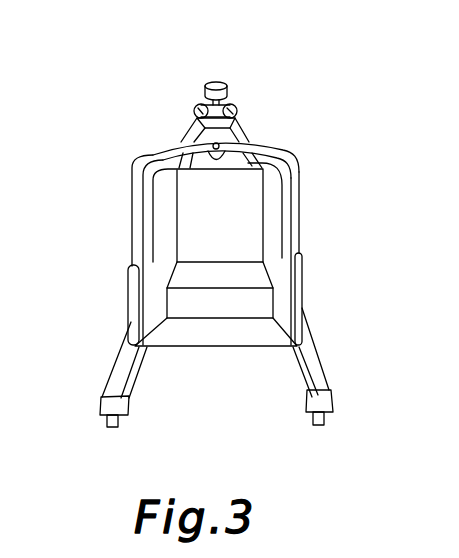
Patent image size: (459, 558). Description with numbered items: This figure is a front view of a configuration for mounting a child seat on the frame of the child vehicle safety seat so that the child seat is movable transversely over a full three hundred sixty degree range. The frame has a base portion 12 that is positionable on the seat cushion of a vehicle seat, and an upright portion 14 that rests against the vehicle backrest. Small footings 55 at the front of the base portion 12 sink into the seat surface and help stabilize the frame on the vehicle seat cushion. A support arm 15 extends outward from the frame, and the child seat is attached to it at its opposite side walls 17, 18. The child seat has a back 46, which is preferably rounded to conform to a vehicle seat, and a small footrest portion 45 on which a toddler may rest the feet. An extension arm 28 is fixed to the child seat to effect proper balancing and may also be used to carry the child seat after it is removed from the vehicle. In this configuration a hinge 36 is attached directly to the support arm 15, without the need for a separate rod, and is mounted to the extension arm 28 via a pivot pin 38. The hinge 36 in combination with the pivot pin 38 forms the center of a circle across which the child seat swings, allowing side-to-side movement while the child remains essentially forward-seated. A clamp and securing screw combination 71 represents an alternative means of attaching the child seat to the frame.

The clamp and securing screw combination 71 is at (197, 80).
The support arm 15 is at (195, 114).
The hinge 36 is at (250, 130).
The extension arm 28 is at (292, 152).
The upright portion 14 is at (143, 158).
The pivot pin 38 is at (218, 163).
The back 46 is at (228, 238).
The side wall 17 is at (286, 273).
The side wall 18 is at (147, 290).
The footrest portion 45 is at (213, 330).
The base portion 12 is at (113, 373).
The footings 55 is at (312, 424).